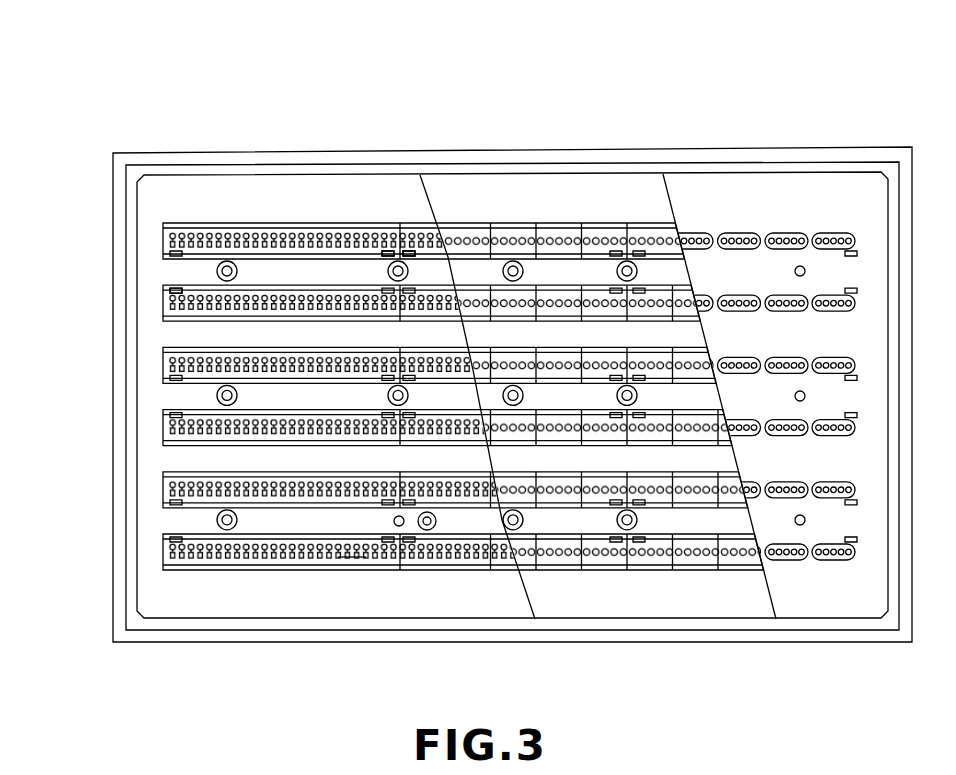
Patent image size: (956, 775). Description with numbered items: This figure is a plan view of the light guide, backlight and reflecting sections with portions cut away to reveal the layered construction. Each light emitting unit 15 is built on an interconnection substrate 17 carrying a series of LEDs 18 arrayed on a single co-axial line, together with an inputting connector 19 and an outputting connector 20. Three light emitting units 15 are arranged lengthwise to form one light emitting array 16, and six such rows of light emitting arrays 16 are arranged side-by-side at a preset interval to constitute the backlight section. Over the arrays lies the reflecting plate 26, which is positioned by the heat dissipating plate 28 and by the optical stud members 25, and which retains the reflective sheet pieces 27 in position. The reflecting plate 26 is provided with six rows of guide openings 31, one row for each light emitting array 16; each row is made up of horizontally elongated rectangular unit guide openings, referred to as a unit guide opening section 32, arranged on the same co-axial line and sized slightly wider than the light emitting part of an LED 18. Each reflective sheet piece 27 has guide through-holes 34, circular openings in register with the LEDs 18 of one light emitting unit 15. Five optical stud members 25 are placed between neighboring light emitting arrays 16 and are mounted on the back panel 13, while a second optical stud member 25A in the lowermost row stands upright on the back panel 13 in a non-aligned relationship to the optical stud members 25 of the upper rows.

The back panel 13 is at (293, 197).
The light emitting unit 15 is at (333, 232).
The light emitting array 16 is at (442, 217).
The interconnection substrate 17 is at (313, 562).
The LED 18 is at (338, 557).
The inputting connector 19 is at (392, 252).
The outputting connector 20 is at (165, 223).
The optical stud member 25 is at (227, 261).
The second optical stud member 25A is at (433, 525).
The reflecting plate 26 is at (702, 203).
The reflective sheet piece 27 is at (552, 234).
The heat dissipating plate 28 is at (510, 615).
The guide opening 31 is at (765, 311).
The unit guide opening section 32 is at (787, 235).
The guide through-hole 34 is at (600, 234).